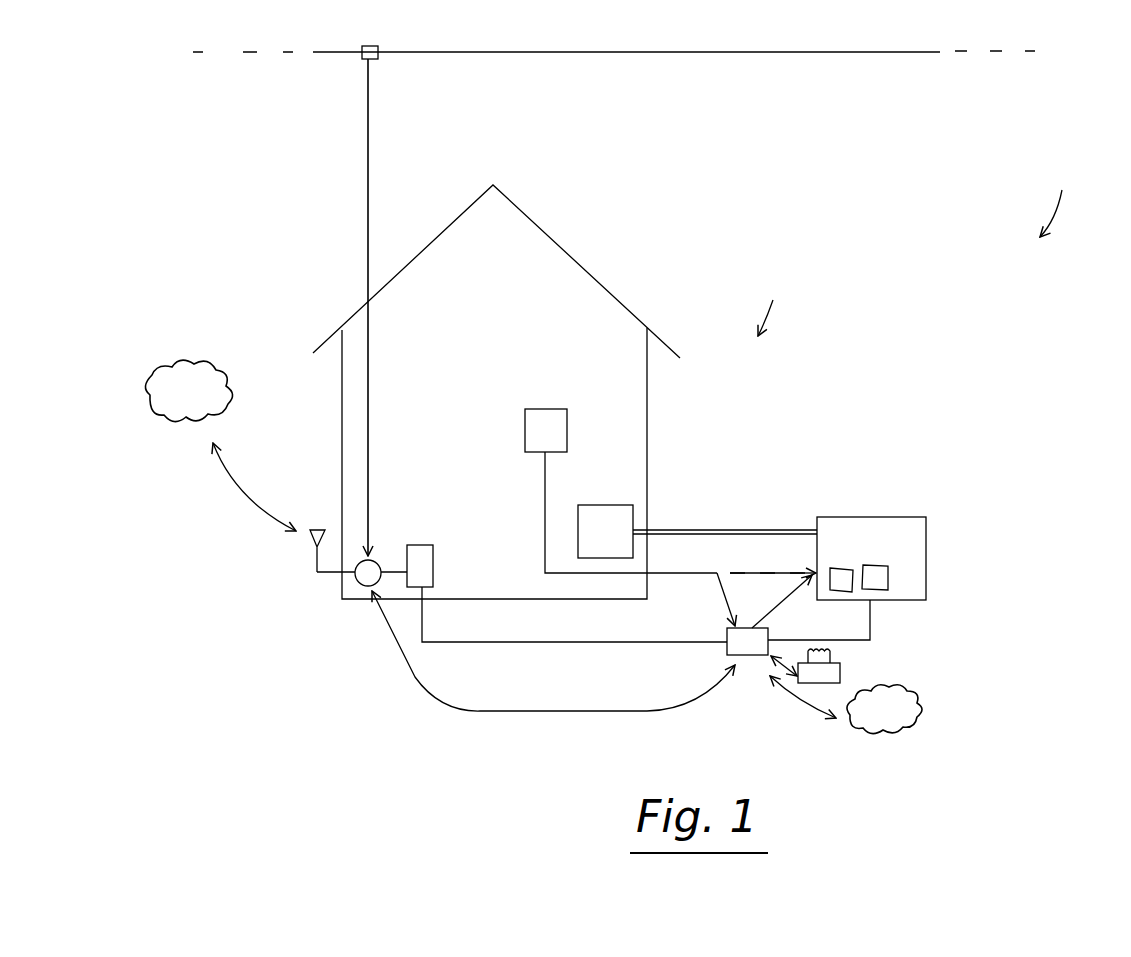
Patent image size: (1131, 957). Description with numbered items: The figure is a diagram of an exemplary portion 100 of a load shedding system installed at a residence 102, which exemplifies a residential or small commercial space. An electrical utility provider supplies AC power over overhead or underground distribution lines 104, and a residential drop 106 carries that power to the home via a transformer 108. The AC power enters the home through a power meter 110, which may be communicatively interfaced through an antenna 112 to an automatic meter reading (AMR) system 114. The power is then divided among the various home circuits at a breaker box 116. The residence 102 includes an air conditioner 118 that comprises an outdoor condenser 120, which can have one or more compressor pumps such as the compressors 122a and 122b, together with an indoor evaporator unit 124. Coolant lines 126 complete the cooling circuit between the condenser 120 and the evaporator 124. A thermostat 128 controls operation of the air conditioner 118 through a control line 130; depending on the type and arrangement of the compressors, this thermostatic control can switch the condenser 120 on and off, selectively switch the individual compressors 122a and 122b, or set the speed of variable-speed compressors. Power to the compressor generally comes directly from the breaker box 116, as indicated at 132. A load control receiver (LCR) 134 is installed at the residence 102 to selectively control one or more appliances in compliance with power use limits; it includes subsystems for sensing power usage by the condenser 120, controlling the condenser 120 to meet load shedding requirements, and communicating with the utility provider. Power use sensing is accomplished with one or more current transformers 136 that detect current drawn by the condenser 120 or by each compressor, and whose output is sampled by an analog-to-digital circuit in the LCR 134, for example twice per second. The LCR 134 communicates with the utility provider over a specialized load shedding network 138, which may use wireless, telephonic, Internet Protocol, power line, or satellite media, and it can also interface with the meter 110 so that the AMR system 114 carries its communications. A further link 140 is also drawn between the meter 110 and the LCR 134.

The portion of a load shedding system 100 is at (1061, 197).
The residence 102 is at (558, 392).
The distribution lines 104 is at (512, 50).
The residential drop 106 is at (369, 158).
The transformer 108 is at (378, 60).
The power meter 110 is at (378, 557).
The antenna 112 is at (312, 564).
The automatic meter reading (AMR) system 114 is at (196, 427).
The breaker box 116 is at (433, 557).
The air conditioner 118 is at (708, 516).
The outdoor condenser 120 is at (880, 550).
The compressor 122a is at (850, 588).
The compressor 122b is at (888, 584).
The indoor evaporator unit 124 is at (617, 504).
The coolant lines 126 is at (678, 530).
The thermostat 128 is at (567, 428).
The control line 130 is at (545, 522).
The compressor power line 132 is at (622, 645).
The load control receiver (LCR) 134 is at (751, 658).
The current transformers 136 is at (840, 672).
The load shedding network 138 is at (900, 736).
The communication path 140 is at (553, 713).